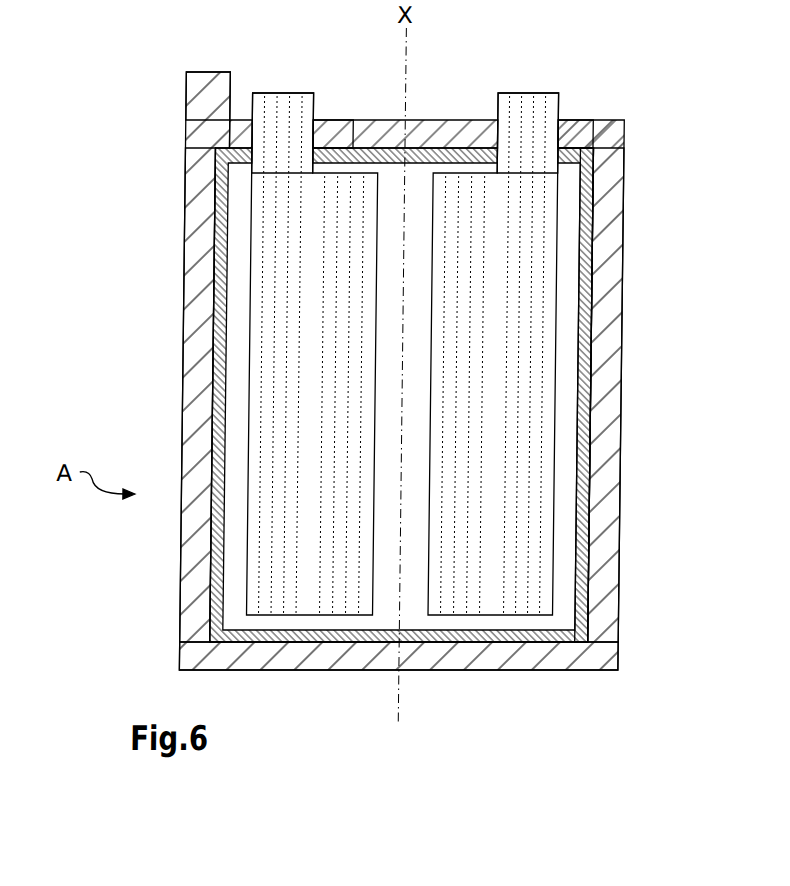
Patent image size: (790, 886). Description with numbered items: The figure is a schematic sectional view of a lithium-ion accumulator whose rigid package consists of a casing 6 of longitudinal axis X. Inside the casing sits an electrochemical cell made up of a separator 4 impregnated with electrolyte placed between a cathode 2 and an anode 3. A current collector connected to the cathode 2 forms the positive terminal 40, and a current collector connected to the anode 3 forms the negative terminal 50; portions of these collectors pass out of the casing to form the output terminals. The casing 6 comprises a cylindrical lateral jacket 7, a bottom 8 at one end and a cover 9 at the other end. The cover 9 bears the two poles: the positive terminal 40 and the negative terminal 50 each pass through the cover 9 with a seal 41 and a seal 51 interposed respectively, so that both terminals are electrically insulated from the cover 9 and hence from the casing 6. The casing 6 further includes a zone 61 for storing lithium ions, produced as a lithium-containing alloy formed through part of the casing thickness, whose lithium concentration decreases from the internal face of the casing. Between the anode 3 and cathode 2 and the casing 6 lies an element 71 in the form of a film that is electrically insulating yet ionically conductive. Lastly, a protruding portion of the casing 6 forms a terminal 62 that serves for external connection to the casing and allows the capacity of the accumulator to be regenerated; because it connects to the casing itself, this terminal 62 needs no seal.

The cathode 2 is at (281, 237).
The anode 3 is at (536, 253).
The separator 4 is at (420, 357).
The casing 6 is at (604, 487).
The cylindrical lateral jacket 7 is at (184, 333).
The bottom 8 is at (532, 672).
The cover 9 is at (466, 118).
The positive terminal 40 is at (282, 95).
The seal 41 is at (314, 115).
The negative terminal 50 is at (524, 93).
The seal 51 is at (558, 118).
The zone for storing lithium ions 61 is at (593, 425).
The terminal 62 is at (209, 87).
The element 71 is at (223, 467).